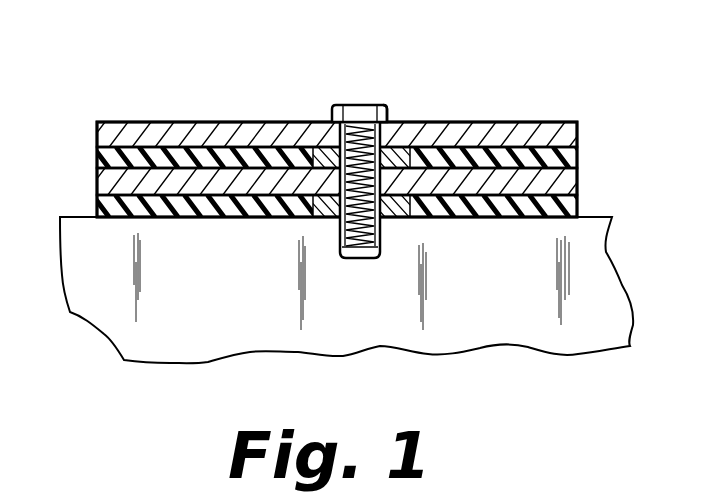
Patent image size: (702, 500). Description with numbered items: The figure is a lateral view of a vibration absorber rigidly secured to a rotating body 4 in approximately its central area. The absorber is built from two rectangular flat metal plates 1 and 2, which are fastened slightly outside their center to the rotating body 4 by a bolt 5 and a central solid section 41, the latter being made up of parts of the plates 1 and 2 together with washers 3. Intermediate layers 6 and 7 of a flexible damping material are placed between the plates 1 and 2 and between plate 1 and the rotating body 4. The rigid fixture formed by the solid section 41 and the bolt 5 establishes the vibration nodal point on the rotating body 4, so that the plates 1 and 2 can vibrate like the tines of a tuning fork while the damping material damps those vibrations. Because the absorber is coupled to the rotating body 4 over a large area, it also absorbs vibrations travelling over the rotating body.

The flat metal plate 1 is at (118, 187).
The flat metal plate 2 is at (118, 140).
The washers 3 is at (398, 158).
The rotating body 4 is at (456, 302).
The bolt 5 is at (362, 117).
The intermediate layer 6 is at (237, 207).
The intermediate layer 7 is at (235, 150).
The central solid section 41 is at (393, 121).